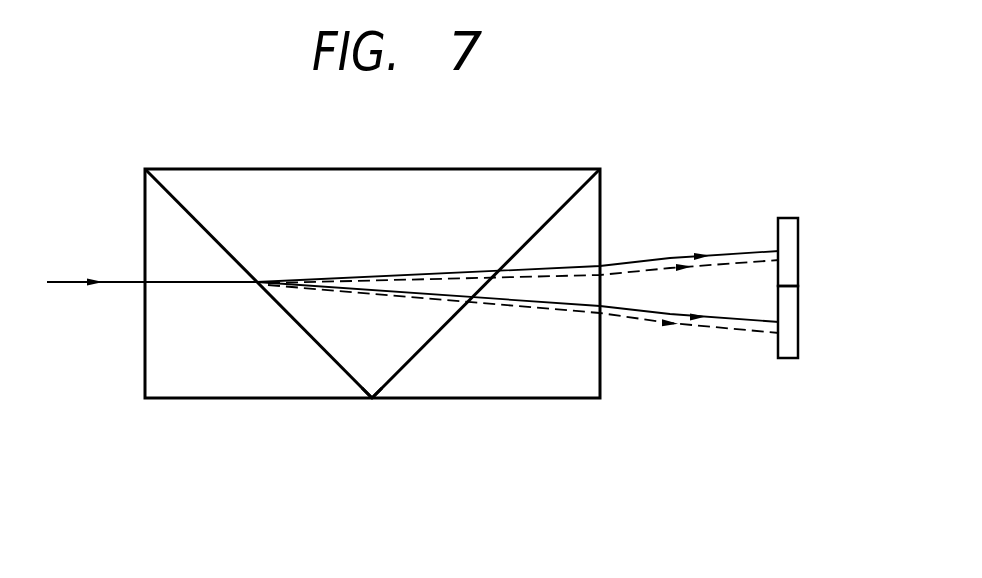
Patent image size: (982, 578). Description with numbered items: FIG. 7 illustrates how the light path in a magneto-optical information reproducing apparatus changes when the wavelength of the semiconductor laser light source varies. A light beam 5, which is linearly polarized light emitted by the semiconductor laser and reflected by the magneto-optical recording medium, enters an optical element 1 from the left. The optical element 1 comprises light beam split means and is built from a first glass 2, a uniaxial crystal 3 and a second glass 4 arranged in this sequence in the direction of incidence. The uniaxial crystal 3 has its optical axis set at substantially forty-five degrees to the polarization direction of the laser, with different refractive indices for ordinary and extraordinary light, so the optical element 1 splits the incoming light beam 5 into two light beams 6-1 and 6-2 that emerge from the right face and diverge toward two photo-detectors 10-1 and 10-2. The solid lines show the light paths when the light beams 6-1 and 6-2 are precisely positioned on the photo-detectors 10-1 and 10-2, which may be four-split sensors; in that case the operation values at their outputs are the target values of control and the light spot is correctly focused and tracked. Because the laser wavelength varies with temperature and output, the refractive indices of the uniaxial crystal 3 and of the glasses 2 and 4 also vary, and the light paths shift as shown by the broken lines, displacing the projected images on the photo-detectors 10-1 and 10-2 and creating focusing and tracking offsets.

The optical element 1 is at (410, 455).
The first glass 2 is at (301, 382).
The uniaxial crystal 3 is at (351, 366).
The second glass 4 is at (403, 388).
The light beam 5 is at (71, 285).
The light beam 6-1 is at (744, 262).
The light beam 6-2 is at (713, 319).
The photo-detector 10-1 is at (790, 231).
The photo-detector 10-2 is at (783, 353).